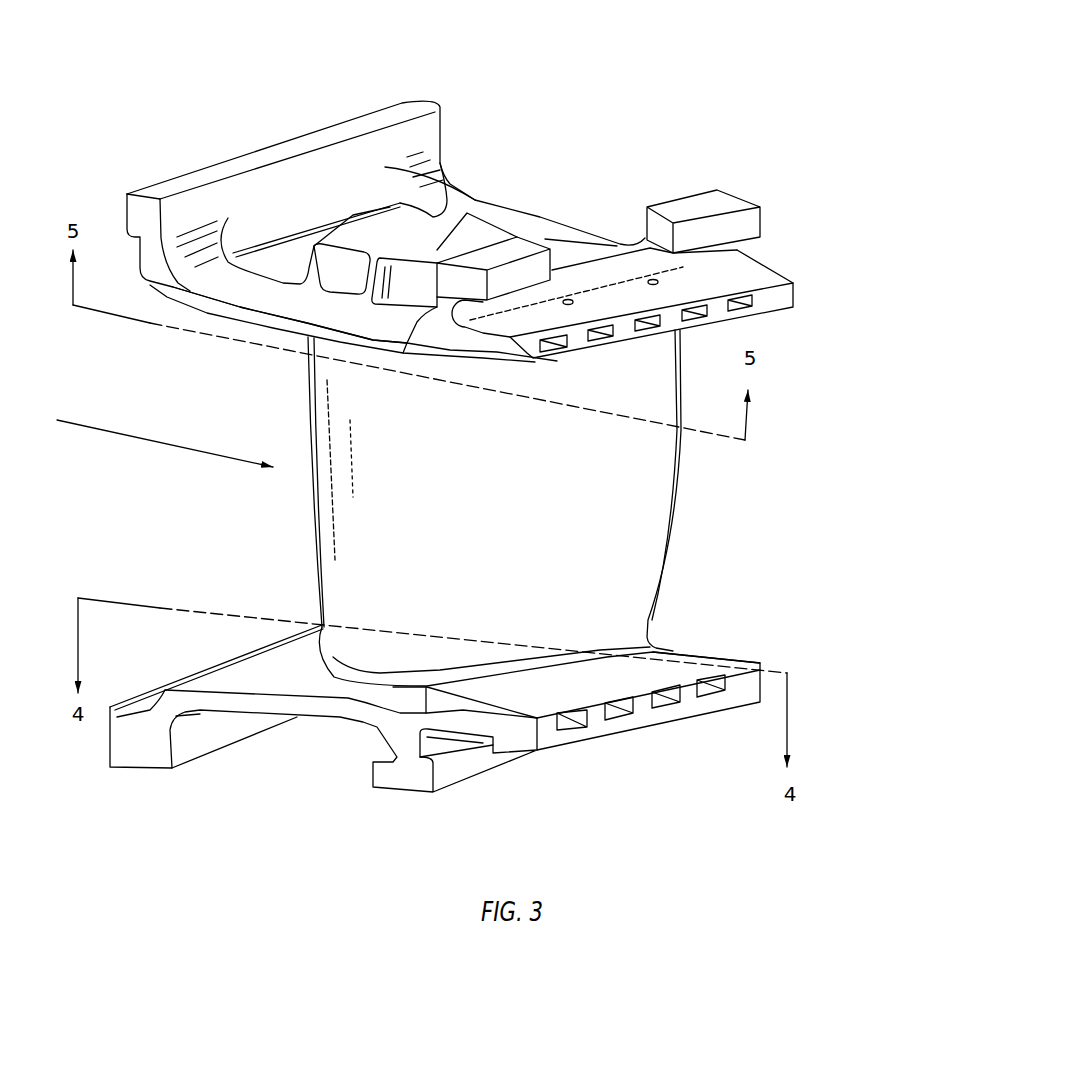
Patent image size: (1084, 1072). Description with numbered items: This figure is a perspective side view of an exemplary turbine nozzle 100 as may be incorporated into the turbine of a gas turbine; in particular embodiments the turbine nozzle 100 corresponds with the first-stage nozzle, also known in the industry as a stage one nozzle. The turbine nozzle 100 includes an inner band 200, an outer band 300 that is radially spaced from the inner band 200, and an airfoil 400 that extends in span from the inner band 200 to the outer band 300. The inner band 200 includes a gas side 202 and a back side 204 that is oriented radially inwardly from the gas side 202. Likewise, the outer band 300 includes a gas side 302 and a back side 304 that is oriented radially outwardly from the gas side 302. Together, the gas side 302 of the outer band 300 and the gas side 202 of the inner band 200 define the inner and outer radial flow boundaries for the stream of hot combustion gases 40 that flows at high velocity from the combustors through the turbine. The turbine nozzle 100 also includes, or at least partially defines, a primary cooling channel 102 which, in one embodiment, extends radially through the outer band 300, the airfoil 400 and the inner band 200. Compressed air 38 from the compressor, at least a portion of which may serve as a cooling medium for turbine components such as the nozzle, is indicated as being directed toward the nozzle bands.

The turbine nozzle 100 is at (670, 72).
The compressed air 38 is at (578, 200).
The hot combustion gases 40 is at (130, 437).
The primary cooling channel 102 is at (335, 268).
The inner band 200 is at (153, 733).
The gas side 202 is at (250, 673).
The back side 204 is at (342, 724).
The outer band 300 is at (193, 287).
The gas side 302 is at (287, 335).
The back side 304 is at (411, 226).
The airfoil 400 is at (417, 498).